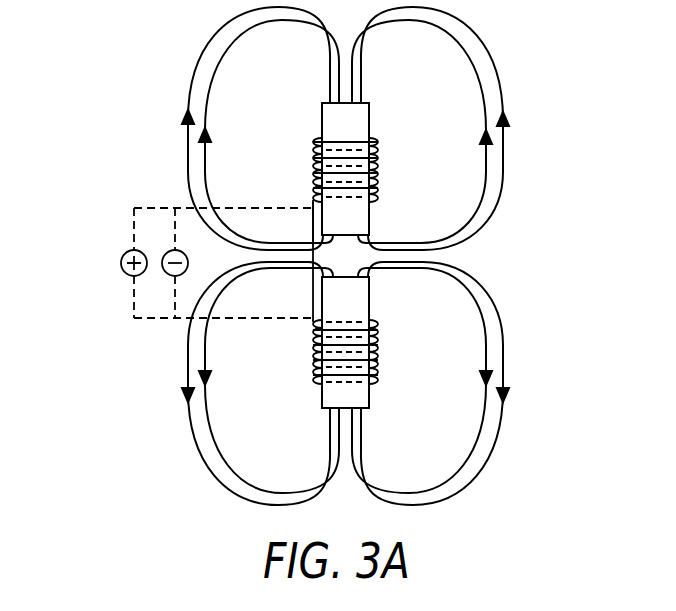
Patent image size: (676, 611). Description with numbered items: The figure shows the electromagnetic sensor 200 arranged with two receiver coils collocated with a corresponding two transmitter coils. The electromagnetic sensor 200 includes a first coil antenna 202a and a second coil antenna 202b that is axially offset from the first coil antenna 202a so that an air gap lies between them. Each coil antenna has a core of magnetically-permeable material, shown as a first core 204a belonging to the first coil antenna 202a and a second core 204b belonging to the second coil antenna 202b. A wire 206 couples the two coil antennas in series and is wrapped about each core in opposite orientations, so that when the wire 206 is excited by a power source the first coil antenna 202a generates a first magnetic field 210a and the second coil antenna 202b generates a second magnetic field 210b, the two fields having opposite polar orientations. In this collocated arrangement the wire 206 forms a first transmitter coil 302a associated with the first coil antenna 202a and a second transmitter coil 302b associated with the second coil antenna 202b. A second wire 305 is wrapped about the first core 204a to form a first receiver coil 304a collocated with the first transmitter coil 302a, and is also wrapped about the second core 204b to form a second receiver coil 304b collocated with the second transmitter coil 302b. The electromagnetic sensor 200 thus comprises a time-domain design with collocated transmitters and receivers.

The electromagnetic sensor 200 is at (95, 80).
The first coil antenna 202a is at (385, 115).
The second coil antenna 202b is at (398, 293).
The first core 204a is at (338, 154).
The second core 204b is at (338, 366).
The wire 206 is at (312, 286).
The first magnetic field 210a is at (510, 98).
The second magnetic field 210b is at (512, 380).
The first transmitter coil 302a is at (318, 142).
The second transmitter coil 302b is at (318, 366).
The first receiver coil 304a is at (318, 150).
The second receiver coil 304b is at (318, 380).
The second wire 305 is at (313, 207).